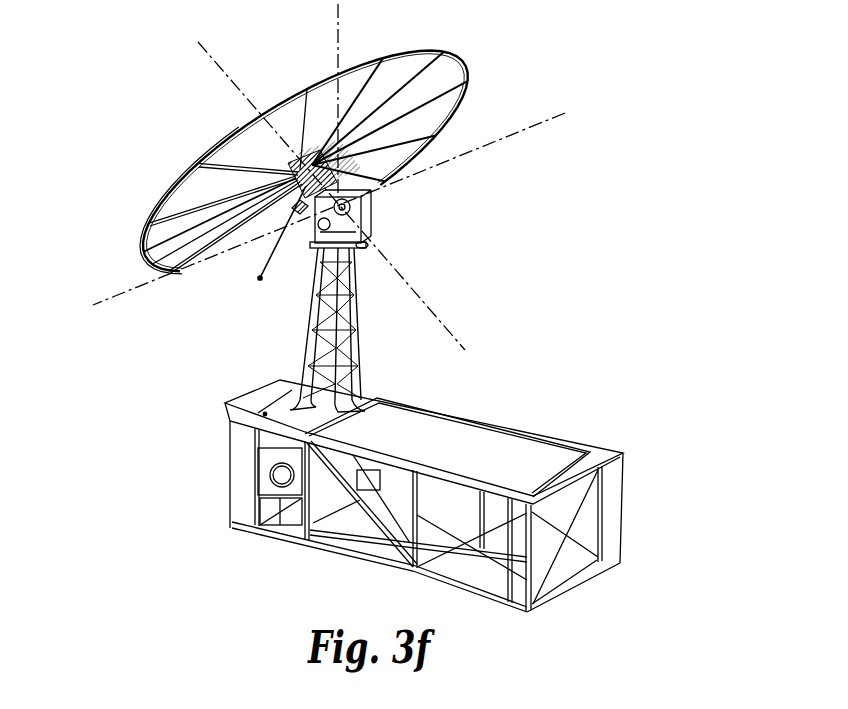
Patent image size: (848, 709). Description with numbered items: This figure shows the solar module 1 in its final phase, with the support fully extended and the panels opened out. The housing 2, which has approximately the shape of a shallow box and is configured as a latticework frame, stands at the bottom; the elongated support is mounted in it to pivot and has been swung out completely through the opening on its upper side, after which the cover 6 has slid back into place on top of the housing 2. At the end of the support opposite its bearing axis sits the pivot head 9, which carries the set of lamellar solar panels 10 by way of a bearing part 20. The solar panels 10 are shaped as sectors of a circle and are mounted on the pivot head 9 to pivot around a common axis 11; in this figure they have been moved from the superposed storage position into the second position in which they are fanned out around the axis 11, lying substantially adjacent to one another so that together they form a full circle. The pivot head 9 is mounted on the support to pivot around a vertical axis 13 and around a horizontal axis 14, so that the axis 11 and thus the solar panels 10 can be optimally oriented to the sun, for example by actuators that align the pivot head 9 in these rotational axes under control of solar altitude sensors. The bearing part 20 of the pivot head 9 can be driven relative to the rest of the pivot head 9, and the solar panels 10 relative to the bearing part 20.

The solar module 1 is at (173, 494).
The housing 2 is at (273, 532).
The cover 6 is at (477, 460).
The pivot head 9 is at (392, 207).
The solar panels 10 is at (450, 70).
The common axis 11 is at (230, 78).
The vertical axis 13 is at (341, 27).
The horizontal axis 14 is at (530, 128).
The bearing part 20 is at (297, 214).